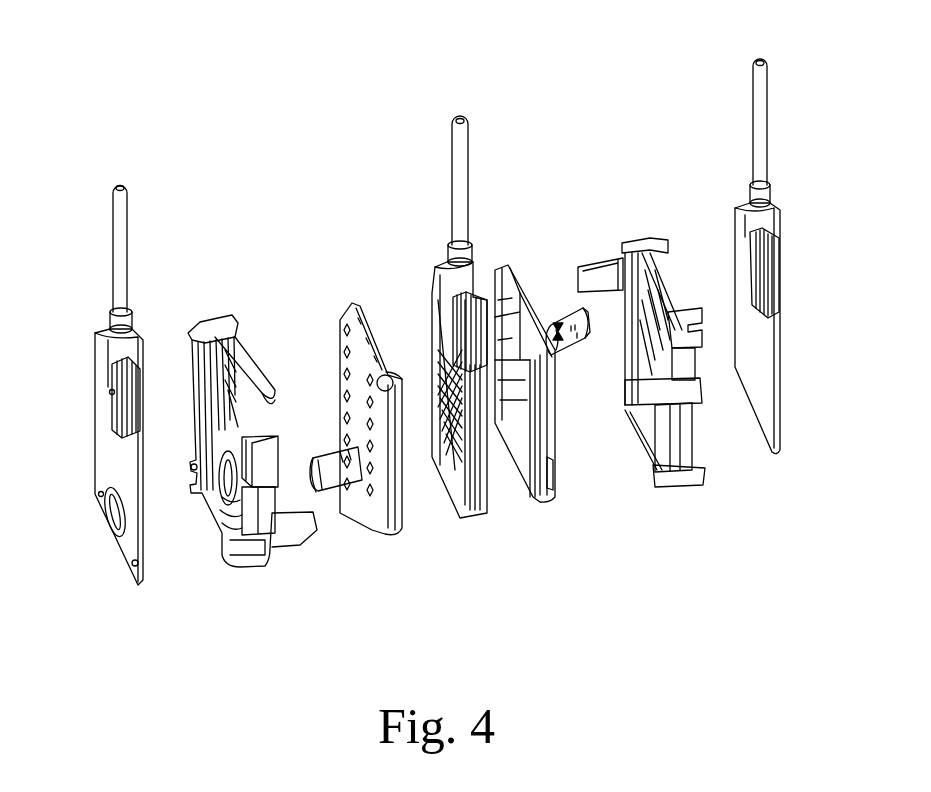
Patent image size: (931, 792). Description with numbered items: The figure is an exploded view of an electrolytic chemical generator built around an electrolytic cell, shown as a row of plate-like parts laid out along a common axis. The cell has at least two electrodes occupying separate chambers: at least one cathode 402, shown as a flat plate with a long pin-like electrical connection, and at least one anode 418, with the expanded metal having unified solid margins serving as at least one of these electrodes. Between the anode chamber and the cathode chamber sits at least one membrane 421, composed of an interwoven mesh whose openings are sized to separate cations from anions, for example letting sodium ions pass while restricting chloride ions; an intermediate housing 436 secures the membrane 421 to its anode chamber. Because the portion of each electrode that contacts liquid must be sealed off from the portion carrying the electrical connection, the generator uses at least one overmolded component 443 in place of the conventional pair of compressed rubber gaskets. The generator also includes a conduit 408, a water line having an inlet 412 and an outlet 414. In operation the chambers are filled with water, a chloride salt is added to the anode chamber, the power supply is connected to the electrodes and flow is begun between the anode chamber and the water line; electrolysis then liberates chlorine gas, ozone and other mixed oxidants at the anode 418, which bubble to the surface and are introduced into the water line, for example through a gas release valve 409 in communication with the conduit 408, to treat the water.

The cathode 402 is at (753, 325).
The overmolded component 443 is at (430, 300).
The anode 418 is at (433, 360).
The conduit 408 is at (333, 463).
The inlet 412 is at (313, 480).
The gas release valve 409 is at (557, 320).
The outlet 414 is at (578, 340).
The membrane 421 is at (356, 440).
The intermediate housing 436 is at (273, 547).